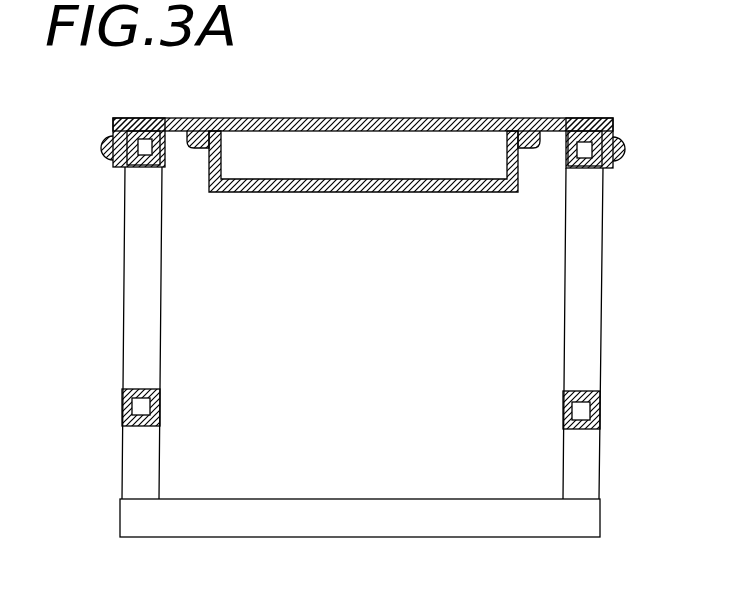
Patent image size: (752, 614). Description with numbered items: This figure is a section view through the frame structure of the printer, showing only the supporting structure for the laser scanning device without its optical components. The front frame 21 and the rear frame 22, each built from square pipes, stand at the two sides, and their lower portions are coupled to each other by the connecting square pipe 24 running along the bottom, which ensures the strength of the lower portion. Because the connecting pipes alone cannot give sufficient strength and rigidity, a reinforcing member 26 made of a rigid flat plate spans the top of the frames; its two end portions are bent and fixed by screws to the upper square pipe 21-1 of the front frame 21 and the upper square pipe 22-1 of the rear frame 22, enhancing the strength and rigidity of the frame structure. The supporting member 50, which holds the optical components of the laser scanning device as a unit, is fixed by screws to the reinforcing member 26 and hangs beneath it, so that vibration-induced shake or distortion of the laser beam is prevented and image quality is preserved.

The reinforcing member 26 is at (387, 118).
The supporting member 50 is at (358, 194).
The upper square pipe 22-1 is at (147, 118).
The upper square pipe 21-1 is at (581, 118).
The rear frame 22 is at (135, 195).
The front frame 21 is at (597, 195).
The square pipe 24 is at (340, 508).